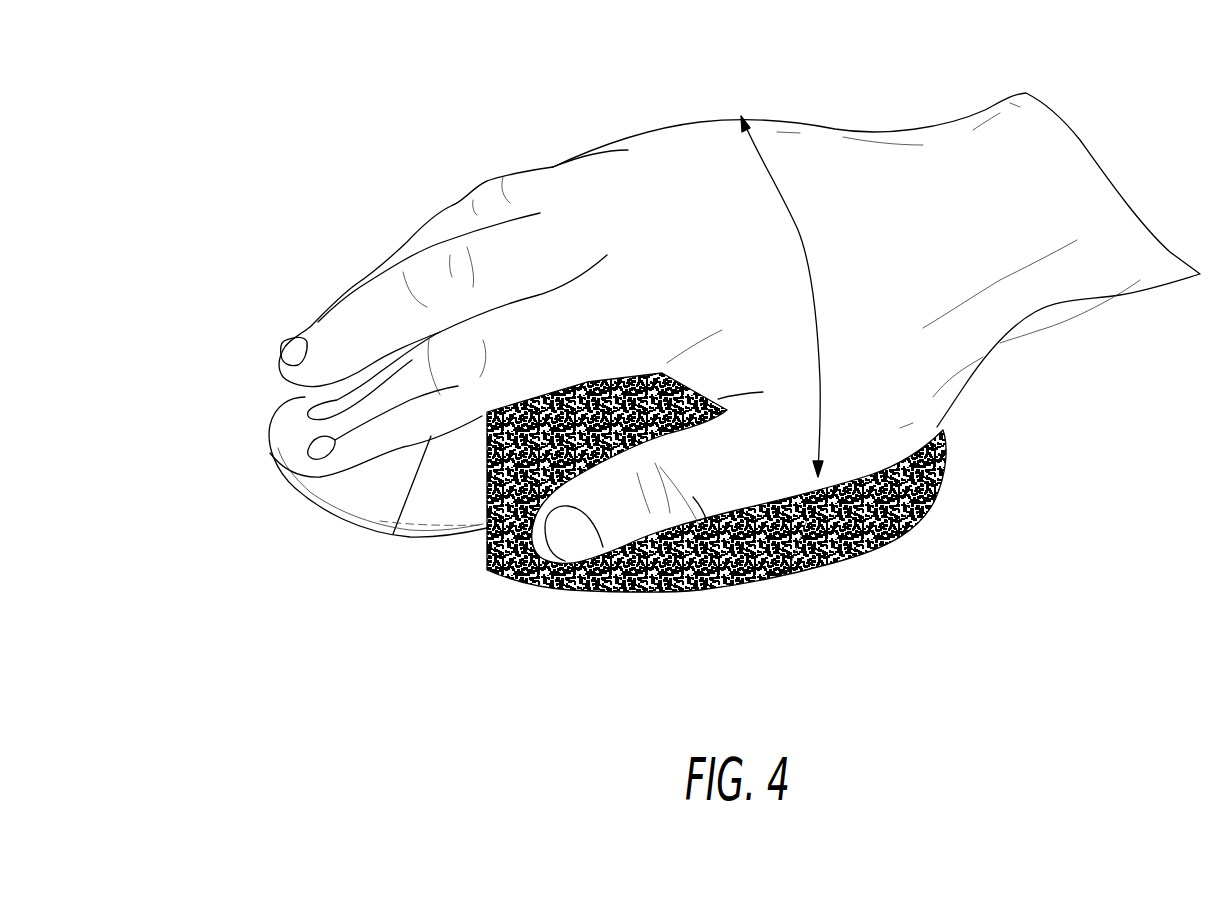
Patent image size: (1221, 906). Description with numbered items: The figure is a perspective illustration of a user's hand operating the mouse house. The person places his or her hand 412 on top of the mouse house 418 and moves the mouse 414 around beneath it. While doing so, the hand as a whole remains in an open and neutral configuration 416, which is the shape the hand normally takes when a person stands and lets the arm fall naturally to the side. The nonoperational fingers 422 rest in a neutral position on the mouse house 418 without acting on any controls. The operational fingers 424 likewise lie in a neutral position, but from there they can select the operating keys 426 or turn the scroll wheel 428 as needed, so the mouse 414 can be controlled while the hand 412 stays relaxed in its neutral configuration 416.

The hand 412 is at (692, 283).
The mouse 414 is at (452, 494).
The open and neutral configuration 416 is at (812, 263).
The mouse house 418 is at (803, 573).
The nonoperational fingers 422 is at (628, 150).
The operational fingers 424 is at (380, 313).
The operating keys 426 is at (285, 406).
The scroll wheel 428 is at (300, 400).